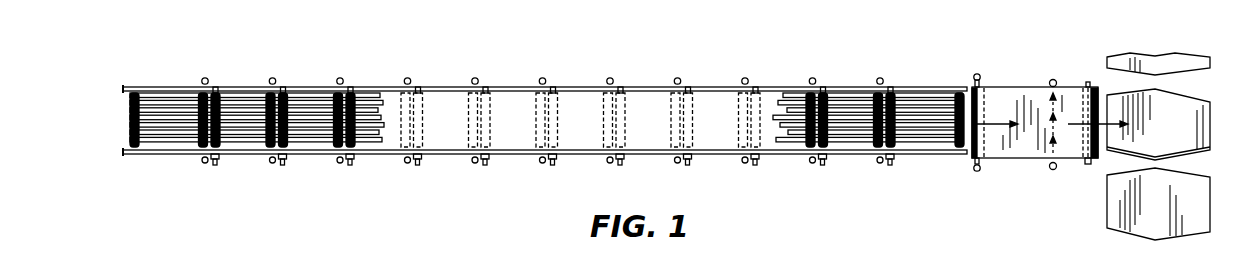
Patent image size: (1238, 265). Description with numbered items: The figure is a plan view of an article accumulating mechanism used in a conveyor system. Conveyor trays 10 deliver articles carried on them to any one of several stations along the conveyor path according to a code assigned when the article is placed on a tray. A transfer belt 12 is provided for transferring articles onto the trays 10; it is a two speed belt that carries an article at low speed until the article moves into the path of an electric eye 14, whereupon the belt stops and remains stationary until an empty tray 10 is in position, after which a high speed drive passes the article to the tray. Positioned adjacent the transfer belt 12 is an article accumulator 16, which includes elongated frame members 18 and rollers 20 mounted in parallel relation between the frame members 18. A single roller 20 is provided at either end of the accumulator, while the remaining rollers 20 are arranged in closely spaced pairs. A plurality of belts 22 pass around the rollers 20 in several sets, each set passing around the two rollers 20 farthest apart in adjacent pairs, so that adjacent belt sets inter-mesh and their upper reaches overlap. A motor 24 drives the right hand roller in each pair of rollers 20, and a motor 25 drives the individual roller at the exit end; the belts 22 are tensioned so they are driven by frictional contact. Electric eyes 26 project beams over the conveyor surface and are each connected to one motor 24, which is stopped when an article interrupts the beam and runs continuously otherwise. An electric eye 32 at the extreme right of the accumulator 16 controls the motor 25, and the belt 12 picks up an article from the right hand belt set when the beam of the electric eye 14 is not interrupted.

The trays 10 is at (1188, 232).
The transfer belt 12 is at (1048, 129).
The electric eye 14 is at (1053, 170).
The article accumulator 16 is at (474, 184).
The frame members 18 is at (527, 87).
The rollers 20 is at (132, 108).
The belts 22 is at (370, 102).
The motor 24 is at (285, 167).
The motor 25 is at (962, 158).
The electric eyes 26 is at (748, 83).
The electric eye 32 is at (992, 56).